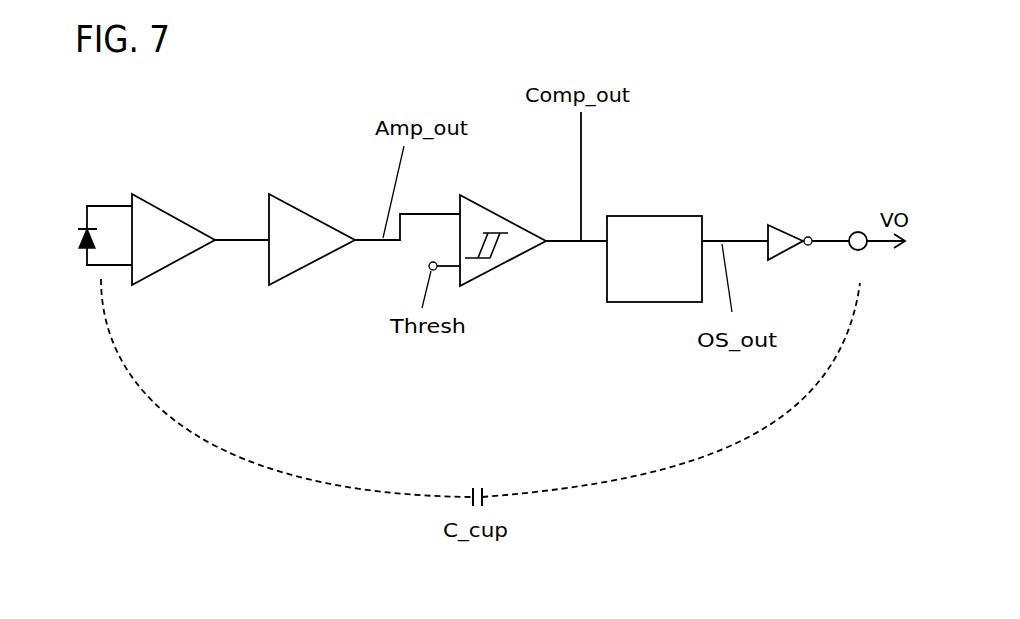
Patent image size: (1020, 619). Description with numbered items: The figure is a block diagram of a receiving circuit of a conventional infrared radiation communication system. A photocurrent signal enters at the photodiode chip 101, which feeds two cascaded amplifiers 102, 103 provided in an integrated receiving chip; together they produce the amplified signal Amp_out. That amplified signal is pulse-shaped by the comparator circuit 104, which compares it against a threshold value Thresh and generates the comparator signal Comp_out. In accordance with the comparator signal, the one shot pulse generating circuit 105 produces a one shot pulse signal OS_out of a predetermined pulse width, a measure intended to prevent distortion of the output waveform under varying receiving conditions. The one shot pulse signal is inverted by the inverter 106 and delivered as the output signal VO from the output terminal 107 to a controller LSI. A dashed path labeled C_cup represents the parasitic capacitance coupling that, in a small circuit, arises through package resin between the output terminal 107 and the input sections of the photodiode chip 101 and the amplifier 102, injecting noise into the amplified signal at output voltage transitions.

The photodiode chip 101 is at (81, 228).
The amplifier 102 is at (153, 202).
The amplifier 103 is at (302, 207).
The comparator circuit 104 is at (493, 210).
The one shot pulse generating circuit 105 is at (665, 213).
The inverter 106 is at (785, 228).
The output terminal 107 is at (856, 232).